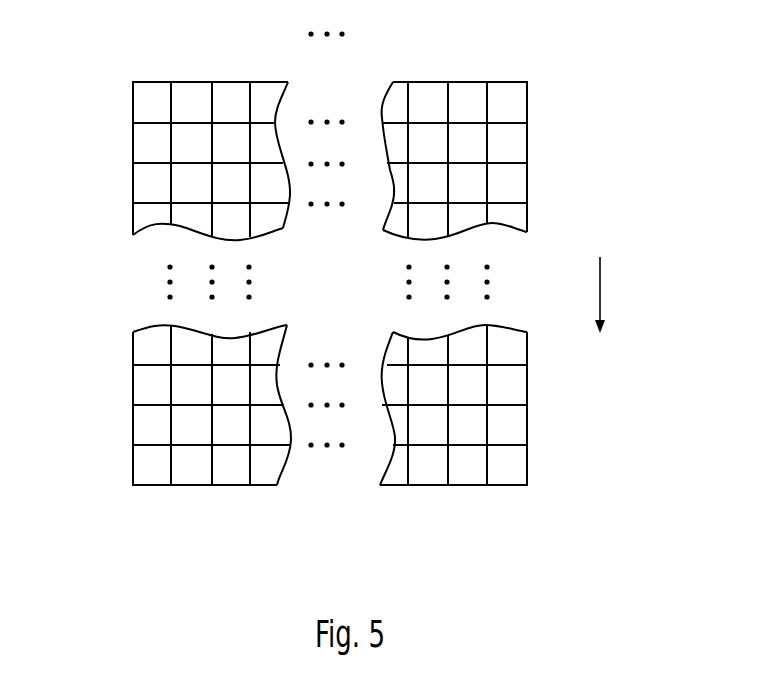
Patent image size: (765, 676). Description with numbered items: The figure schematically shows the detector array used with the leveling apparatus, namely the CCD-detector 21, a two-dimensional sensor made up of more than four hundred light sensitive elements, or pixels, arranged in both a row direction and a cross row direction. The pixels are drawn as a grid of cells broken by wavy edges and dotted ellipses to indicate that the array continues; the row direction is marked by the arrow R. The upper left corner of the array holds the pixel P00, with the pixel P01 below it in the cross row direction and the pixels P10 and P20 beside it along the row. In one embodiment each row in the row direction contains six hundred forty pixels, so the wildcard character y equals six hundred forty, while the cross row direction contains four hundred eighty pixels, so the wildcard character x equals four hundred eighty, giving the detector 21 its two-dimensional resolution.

The CCD-detector 21 is at (550, 92).
The row direction R is at (605, 295).
The pixel P00 is at (133, 105).
The pixel P01 is at (133, 143).
The pixel P10 is at (190, 82).
The pixel P20 is at (228, 82).